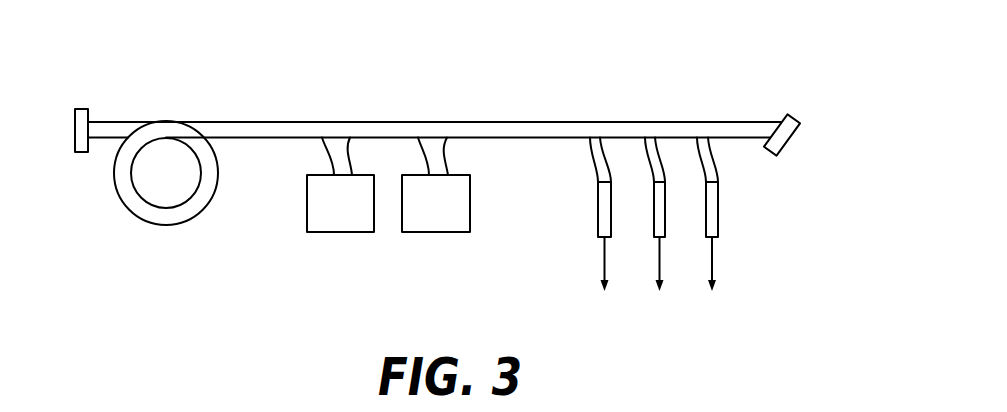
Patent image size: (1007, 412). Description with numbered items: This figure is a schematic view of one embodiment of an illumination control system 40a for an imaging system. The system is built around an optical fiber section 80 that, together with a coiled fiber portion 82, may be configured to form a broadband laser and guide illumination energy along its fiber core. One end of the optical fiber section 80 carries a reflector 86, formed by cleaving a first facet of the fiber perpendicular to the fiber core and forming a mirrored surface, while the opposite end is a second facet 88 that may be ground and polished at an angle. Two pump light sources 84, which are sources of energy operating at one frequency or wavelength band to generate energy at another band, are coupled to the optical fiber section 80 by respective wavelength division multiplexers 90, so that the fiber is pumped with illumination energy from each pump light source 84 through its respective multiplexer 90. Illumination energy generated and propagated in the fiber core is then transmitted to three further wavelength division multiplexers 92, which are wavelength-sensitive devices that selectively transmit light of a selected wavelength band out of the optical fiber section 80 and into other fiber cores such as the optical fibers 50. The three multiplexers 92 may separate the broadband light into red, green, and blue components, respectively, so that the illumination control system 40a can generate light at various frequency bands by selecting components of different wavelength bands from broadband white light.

The illumination control system 40a is at (672, 65).
The optical fiber section 80 is at (315, 122).
The coiled fiber portion 82 is at (168, 225).
The pump light sources 84 is at (335, 232).
The reflector 86 is at (75, 141).
The facet 88 is at (790, 138).
The wavelength division multiplexers 90 is at (352, 138).
The wavelength division multiplexers 92 is at (597, 175).
The optical fibers 50 is at (598, 240).